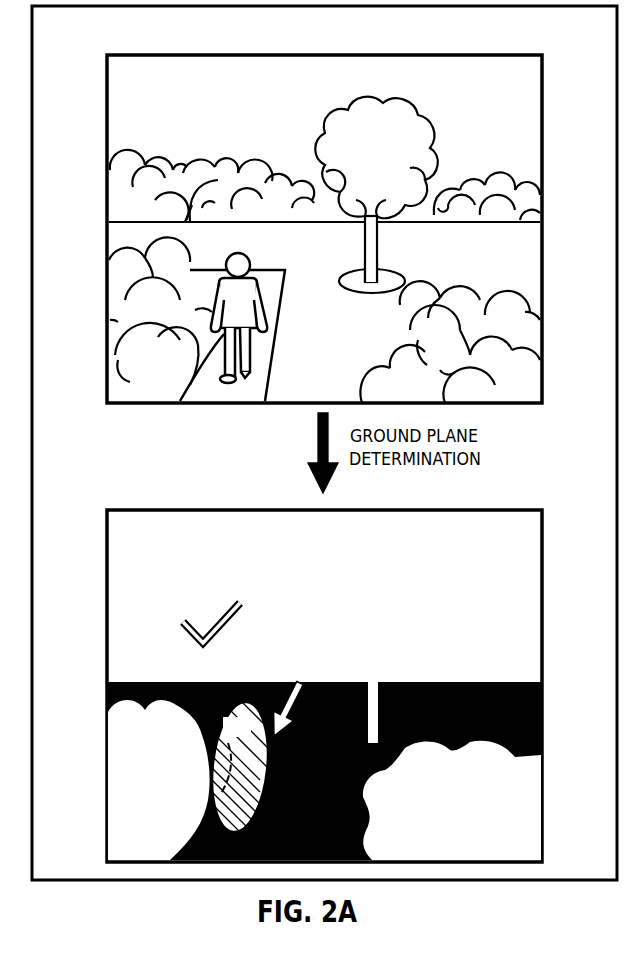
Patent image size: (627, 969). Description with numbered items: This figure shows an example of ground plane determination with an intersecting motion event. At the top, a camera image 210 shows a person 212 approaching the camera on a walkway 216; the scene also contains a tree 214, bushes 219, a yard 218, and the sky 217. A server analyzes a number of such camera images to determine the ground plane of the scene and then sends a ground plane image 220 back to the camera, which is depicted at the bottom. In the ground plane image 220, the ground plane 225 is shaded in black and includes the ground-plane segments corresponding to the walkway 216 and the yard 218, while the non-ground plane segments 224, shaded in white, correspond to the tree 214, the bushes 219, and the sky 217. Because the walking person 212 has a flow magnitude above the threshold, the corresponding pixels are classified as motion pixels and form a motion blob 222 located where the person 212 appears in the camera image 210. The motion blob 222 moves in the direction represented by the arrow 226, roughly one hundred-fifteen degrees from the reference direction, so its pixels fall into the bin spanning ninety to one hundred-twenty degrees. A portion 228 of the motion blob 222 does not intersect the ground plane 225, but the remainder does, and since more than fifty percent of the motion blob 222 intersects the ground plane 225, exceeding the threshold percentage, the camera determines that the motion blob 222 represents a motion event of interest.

The camera image 210 is at (279, 54).
The person 212 is at (257, 260).
The tree 214 is at (428, 140).
The walkway 216 is at (272, 380).
The sky 217 is at (525, 87).
The yard 218 is at (509, 260).
The bushes 219 is at (458, 292).
The ground plane image 220 is at (280, 509).
The motion blob 222 is at (249, 736).
The non-ground plane segments 224 is at (472, 818).
The ground plane 225 is at (467, 682).
The arrow 226 is at (300, 680).
The portion of the motion blob 228 is at (219, 766).